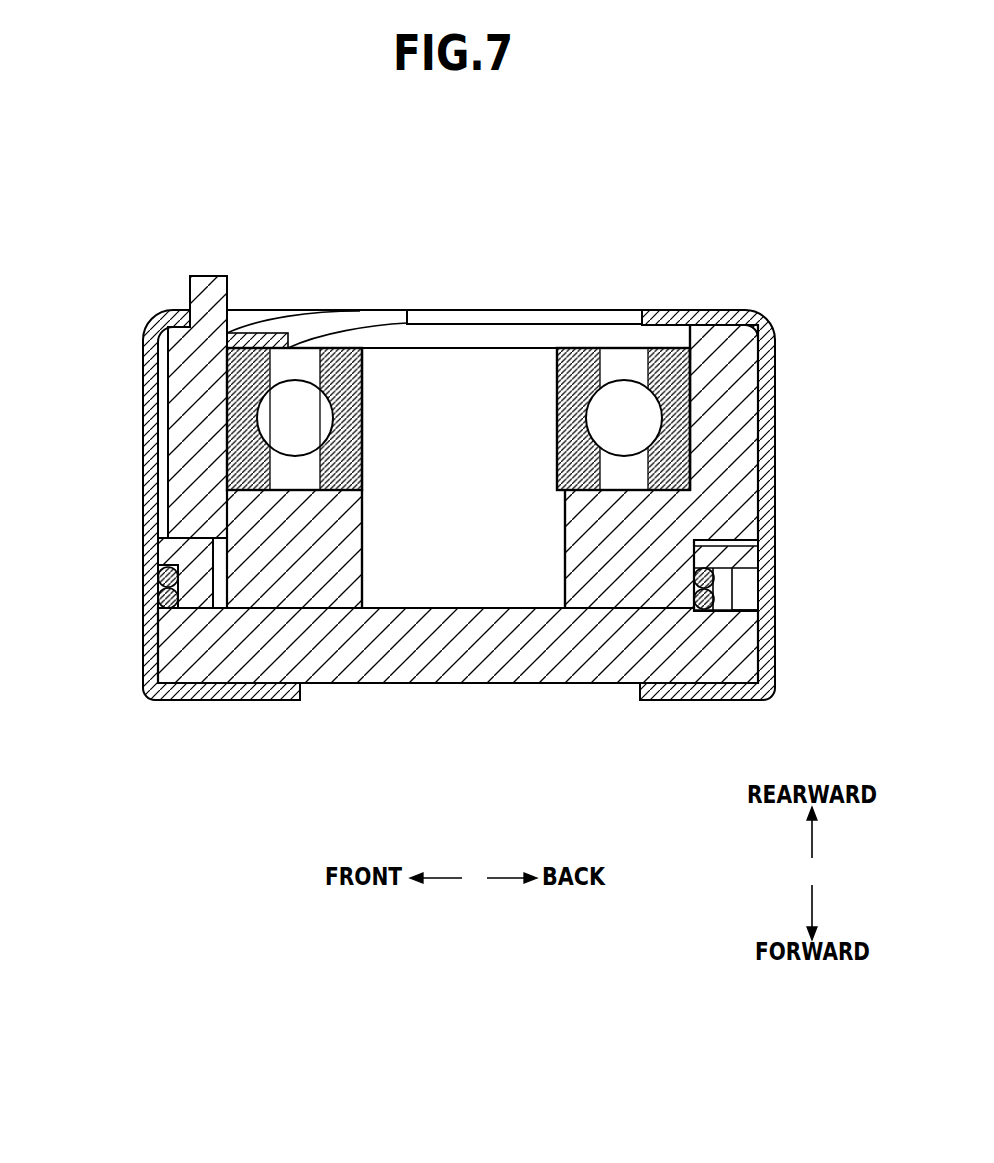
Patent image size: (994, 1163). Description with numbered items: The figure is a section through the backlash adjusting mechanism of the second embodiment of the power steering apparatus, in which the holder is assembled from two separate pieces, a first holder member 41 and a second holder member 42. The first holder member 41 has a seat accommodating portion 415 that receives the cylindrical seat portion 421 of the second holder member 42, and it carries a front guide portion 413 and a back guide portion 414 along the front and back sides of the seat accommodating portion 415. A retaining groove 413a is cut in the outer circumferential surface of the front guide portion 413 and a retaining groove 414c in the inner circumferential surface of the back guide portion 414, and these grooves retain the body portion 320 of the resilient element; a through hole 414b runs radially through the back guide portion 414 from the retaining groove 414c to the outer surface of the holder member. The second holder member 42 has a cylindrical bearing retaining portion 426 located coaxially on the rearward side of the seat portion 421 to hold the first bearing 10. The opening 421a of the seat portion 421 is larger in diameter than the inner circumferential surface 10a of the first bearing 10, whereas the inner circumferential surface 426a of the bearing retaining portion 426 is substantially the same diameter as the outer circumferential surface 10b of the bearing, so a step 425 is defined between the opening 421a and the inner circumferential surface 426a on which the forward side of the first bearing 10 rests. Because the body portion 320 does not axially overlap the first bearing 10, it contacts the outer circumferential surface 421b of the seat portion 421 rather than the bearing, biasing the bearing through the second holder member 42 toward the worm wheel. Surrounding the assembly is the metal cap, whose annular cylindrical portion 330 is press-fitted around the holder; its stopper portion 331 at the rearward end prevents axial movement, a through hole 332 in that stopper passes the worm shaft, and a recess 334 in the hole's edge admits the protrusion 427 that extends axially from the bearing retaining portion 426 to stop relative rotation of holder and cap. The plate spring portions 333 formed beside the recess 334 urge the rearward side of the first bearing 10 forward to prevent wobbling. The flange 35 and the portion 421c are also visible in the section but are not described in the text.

The first bearing 10 is at (562, 336).
The inner circumferential surface of the first bearing 10a is at (557, 415).
The outer circumferential surface of the first bearing 10b is at (690, 418).
The rear flange of rear case 35 is at (703, 701).
The first holder member 41 is at (541, 690).
The second holder member 42 is at (150, 442).
The body portion 320 is at (713, 578).
The annular cylindrical portion 330 is at (775, 456).
The stopper portion 331 is at (707, 306).
The through hole 332 is at (625, 308).
The plate spring portions 333 is at (298, 317).
The recess 334 is at (190, 318).
The front guide portion 413 is at (168, 556).
The retaining groove 413a is at (158, 597).
The back guide portion 414 is at (753, 560).
The through hole 414b is at (748, 608).
The retaining groove 414c is at (760, 612).
The seat accommodating portion 415 is at (437, 607).
The seat portion 421 is at (298, 592).
The opening 421a is at (565, 574).
The outer circumferential surface of the seat portion 421b is at (213, 588).
The rear portion of base 421c is at (595, 612).
The step 425 is at (595, 486).
The bearing retaining portion 426 is at (740, 347).
The inner circumferential surface of the bearing retaining portion 426a is at (675, 363).
The protrusion 427 is at (208, 275).